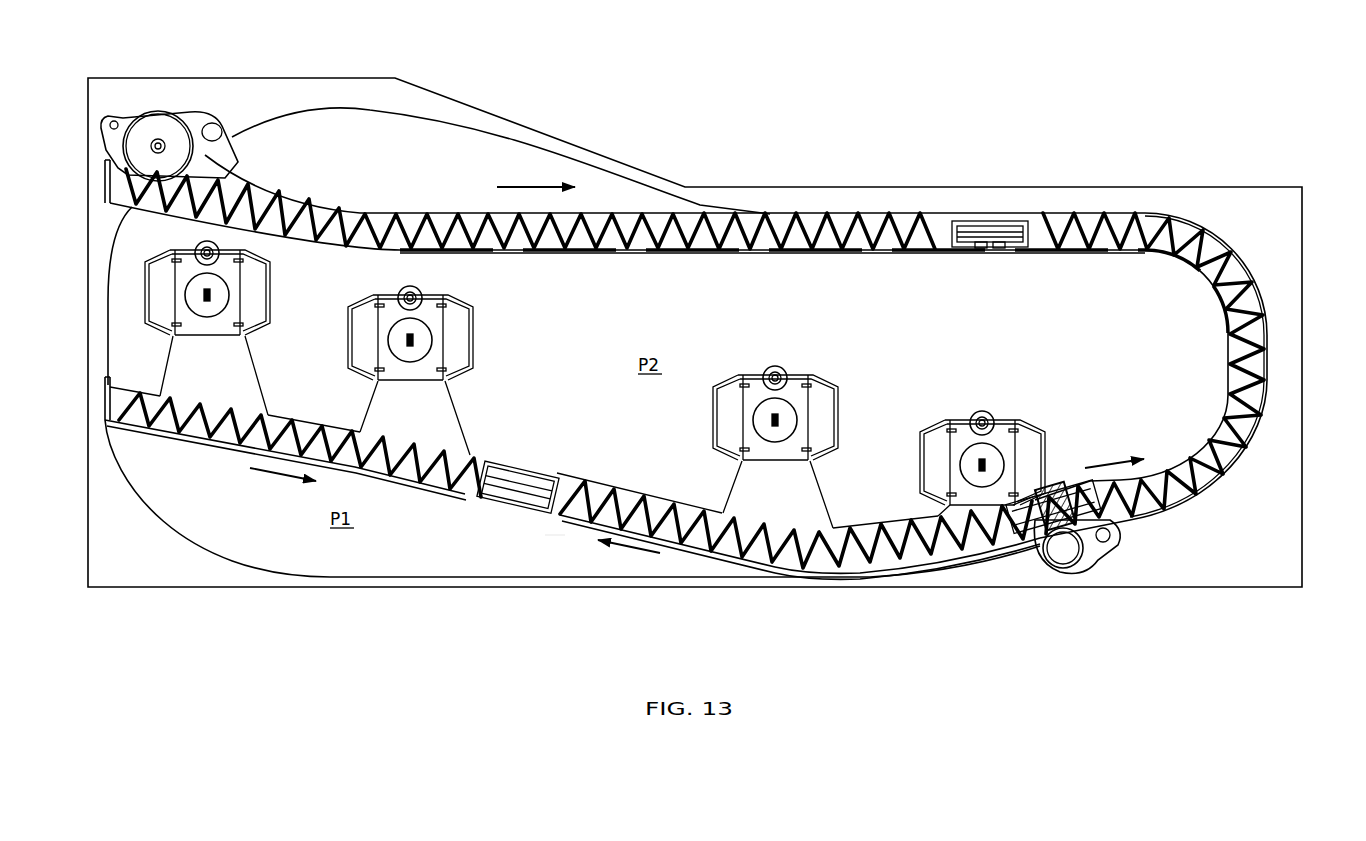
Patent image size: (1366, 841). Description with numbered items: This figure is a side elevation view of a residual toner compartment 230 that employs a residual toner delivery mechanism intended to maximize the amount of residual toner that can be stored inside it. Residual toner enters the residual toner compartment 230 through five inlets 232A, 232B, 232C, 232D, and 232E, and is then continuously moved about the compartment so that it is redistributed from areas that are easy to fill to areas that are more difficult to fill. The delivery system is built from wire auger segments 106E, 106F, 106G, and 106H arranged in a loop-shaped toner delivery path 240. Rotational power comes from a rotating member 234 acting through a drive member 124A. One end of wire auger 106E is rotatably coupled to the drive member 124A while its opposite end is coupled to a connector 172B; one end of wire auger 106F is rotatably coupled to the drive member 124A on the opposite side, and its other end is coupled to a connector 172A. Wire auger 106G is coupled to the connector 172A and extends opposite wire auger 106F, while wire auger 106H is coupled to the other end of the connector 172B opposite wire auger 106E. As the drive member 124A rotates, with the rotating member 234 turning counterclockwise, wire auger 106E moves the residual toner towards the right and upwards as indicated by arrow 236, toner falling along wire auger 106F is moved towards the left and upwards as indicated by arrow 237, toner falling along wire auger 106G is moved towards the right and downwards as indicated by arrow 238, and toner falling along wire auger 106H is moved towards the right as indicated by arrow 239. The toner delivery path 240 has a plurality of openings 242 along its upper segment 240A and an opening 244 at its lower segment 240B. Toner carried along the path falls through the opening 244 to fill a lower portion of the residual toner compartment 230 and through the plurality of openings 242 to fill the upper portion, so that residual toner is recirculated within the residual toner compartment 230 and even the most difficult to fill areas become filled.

The residual toner compartment 230 is at (895, 108).
The inlet 232A is at (997, 458).
The inlet 232B is at (787, 418).
The inlet 232C is at (423, 338).
The inlet 232D is at (220, 295).
The inlet 232E is at (163, 127).
The rotating member 234 is at (1060, 572).
The arrow 236 is at (1110, 464).
The arrow 237 is at (632, 549).
The arrow 238 is at (278, 474).
The arrow 239 is at (536, 202).
The toner delivery path 240 is at (708, 563).
The upper segment 240A is at (758, 202).
The lower segment 240B is at (556, 538).
The openings 242 is at (455, 253).
The opening 244 is at (497, 500).
The wire auger 106E is at (1265, 390).
The wire auger 106F is at (908, 550).
The wire auger 106G is at (424, 493).
The wire auger 106H is at (918, 228).
The drive member 124A is at (1043, 490).
The connector 172A is at (522, 470).
The connector 172B is at (990, 224).